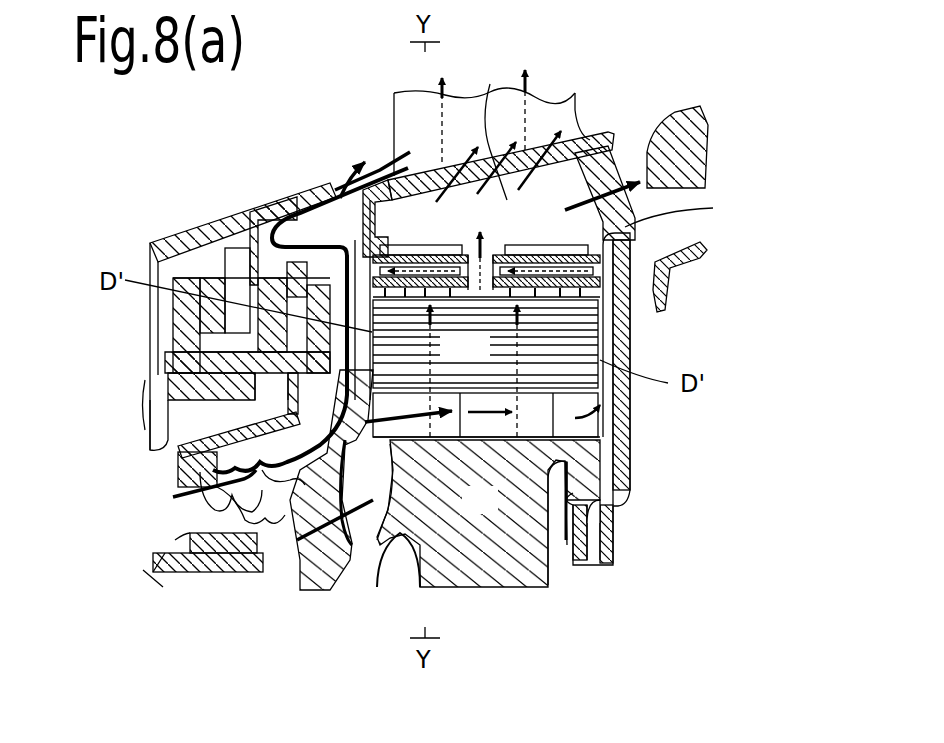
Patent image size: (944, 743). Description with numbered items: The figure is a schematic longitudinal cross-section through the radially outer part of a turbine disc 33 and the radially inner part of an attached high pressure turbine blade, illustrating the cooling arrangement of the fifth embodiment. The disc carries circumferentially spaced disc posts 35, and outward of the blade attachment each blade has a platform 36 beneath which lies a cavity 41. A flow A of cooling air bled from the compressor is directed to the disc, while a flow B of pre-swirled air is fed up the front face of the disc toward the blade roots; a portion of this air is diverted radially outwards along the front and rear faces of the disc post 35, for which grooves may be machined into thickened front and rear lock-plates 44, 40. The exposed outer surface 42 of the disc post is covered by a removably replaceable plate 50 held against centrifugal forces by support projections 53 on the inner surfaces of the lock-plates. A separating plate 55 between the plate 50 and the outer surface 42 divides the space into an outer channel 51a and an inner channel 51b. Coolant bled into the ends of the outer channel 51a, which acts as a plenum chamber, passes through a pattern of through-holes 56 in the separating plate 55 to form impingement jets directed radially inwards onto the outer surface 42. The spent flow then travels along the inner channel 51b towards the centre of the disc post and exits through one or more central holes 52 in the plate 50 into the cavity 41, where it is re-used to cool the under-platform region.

The turbine disc 33 is at (493, 511).
The disc post 35 is at (603, 363).
The platform 36 is at (432, 172).
The rear lock-plate 40 is at (686, 166).
The cavity 41 is at (483, 107).
The exposed outer surface 42 is at (603, 307).
The front lock-plate 44 is at (327, 190).
The plate 50 is at (548, 252).
The outer channel 51a is at (640, 243).
The inner channel 51b is at (620, 288).
The hole 52 is at (473, 253).
The support projection 53 is at (390, 175).
The separating plate 55 is at (438, 298).
The through-hole 56 is at (262, 207).
The cooling air flow A is at (160, 402).
The pre-swirled air flow B is at (315, 525).